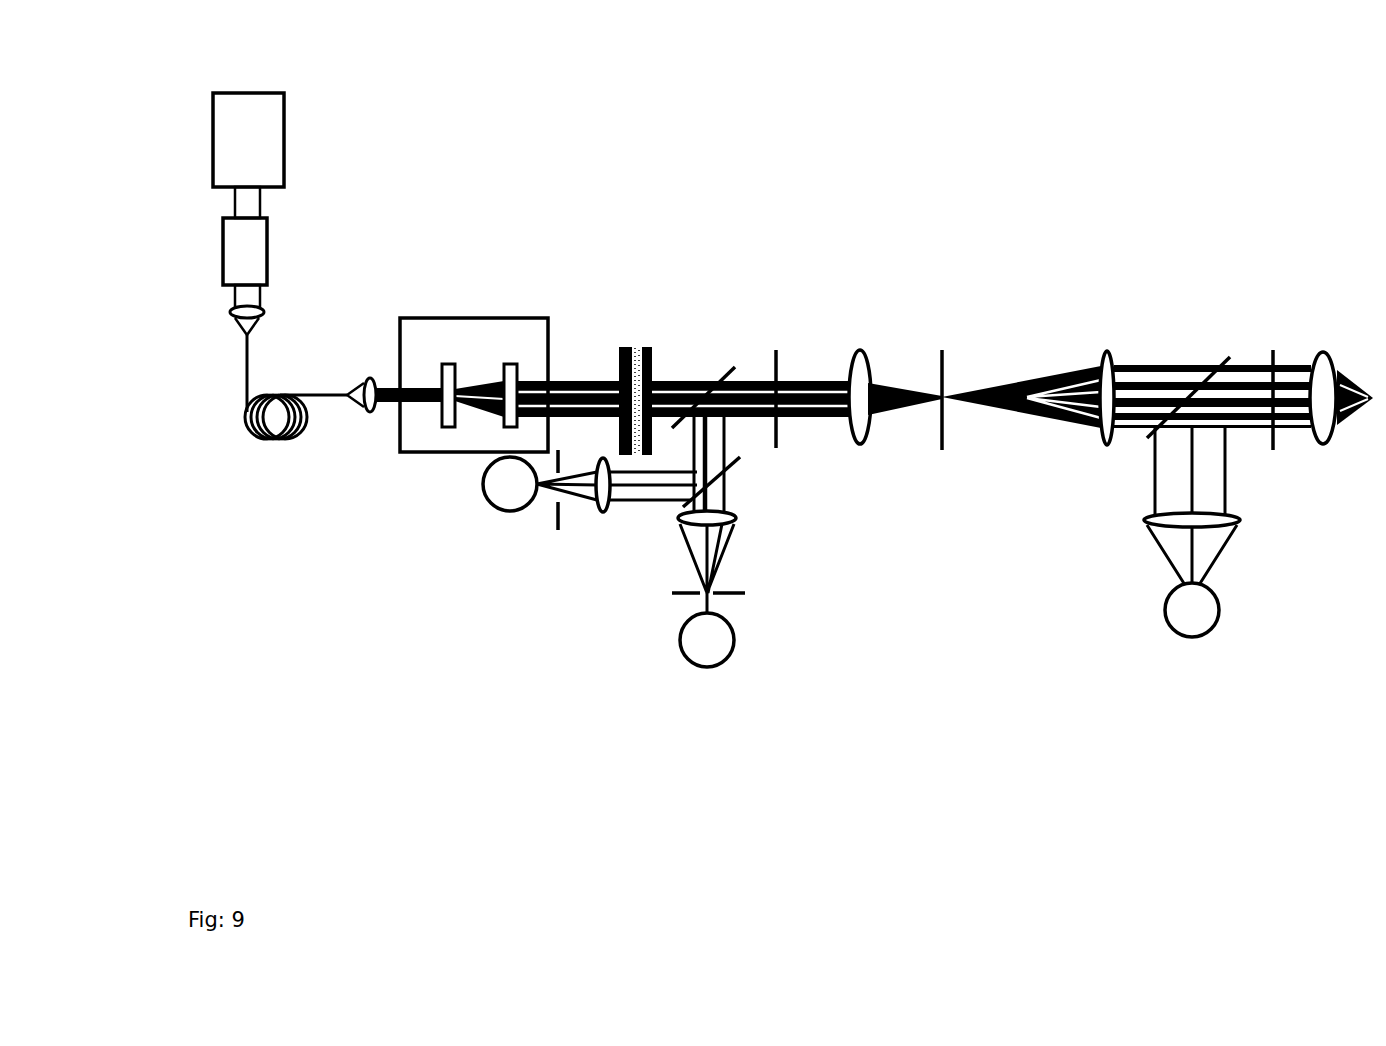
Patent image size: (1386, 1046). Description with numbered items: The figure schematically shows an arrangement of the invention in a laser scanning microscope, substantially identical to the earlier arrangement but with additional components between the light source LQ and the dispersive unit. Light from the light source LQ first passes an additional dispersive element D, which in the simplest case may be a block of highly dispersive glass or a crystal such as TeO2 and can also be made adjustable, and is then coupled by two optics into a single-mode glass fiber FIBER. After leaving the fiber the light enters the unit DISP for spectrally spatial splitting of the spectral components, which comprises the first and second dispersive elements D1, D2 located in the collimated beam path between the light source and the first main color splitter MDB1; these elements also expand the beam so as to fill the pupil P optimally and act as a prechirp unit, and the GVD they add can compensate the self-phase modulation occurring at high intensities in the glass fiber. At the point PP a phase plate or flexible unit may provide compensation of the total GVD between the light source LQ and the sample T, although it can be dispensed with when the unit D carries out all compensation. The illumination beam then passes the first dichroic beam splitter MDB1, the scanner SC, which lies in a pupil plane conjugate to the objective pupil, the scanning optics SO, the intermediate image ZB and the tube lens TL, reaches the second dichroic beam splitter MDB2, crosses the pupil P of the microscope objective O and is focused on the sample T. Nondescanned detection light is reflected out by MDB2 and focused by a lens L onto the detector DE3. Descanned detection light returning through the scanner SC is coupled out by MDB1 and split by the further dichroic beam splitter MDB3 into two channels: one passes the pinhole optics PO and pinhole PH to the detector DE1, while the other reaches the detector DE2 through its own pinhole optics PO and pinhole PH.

The light source LQ is at (248, 119).
The dispersive element D is at (265, 261).
The single-mode glass fiber FIBER is at (306, 415).
The unit for spectrally spatial splitting DISP is at (474, 363).
The first dispersive element D1 is at (440, 378).
The second dispersive element D2 is at (513, 378).
The phase plate PP is at (635, 382).
The first dichroic beam splitter MDB1 is at (710, 372).
The scanner SC is at (784, 379).
The scanning optics SO is at (892, 420).
The intermediate image ZB is at (937, 420).
The tube lens TL is at (1113, 421).
The second dichroic beam splitter MDB2 is at (1188, 378).
The lens L is at (1213, 549).
The detector for nondescanned detection DE3 is at (1182, 633).
The pupil of the microscope objective P is at (1273, 421).
The microscope objective O is at (1323, 422).
The sample T is at (1356, 380).
The detector DE2 is at (519, 499).
The pinhole PH is at (663, 521).
The pinhole optics PO is at (689, 525).
The dichroic beam splitter MDB3 is at (746, 482).
The detector DE1 is at (740, 630).